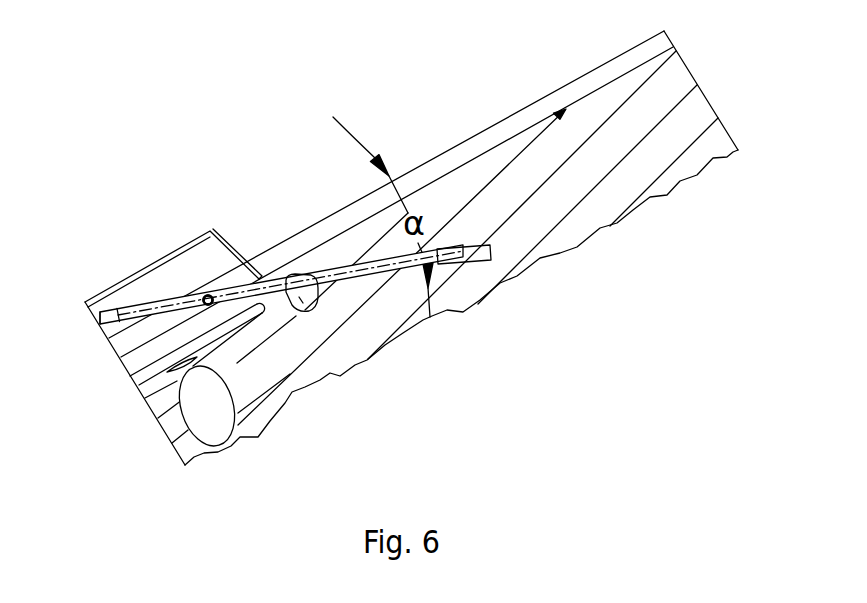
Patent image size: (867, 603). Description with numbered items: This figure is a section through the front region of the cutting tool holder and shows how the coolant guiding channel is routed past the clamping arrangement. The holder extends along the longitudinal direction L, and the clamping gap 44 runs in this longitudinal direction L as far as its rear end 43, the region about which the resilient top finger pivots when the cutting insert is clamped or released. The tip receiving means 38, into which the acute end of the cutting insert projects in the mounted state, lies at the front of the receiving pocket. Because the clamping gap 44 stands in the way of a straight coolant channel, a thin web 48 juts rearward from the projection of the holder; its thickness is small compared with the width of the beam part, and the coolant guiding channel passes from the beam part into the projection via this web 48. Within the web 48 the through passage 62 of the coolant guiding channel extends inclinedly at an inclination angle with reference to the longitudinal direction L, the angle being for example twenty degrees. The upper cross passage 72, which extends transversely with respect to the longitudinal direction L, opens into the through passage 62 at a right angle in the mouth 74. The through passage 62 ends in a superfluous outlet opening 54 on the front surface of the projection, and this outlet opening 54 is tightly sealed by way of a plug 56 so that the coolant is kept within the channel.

The tip receiving means 38 is at (189, 465).
The rear end of the clamping gap 43 is at (290, 312).
The clamping gap 44 is at (227, 333).
The web 48 is at (297, 300).
The outlet opening 54 is at (100, 322).
The plug 56 is at (96, 322).
The through passage 62 is at (152, 302).
The upper cross passage 72 is at (213, 294).
The mouth 74 is at (213, 294).
The longitudinal direction L is at (732, 85).